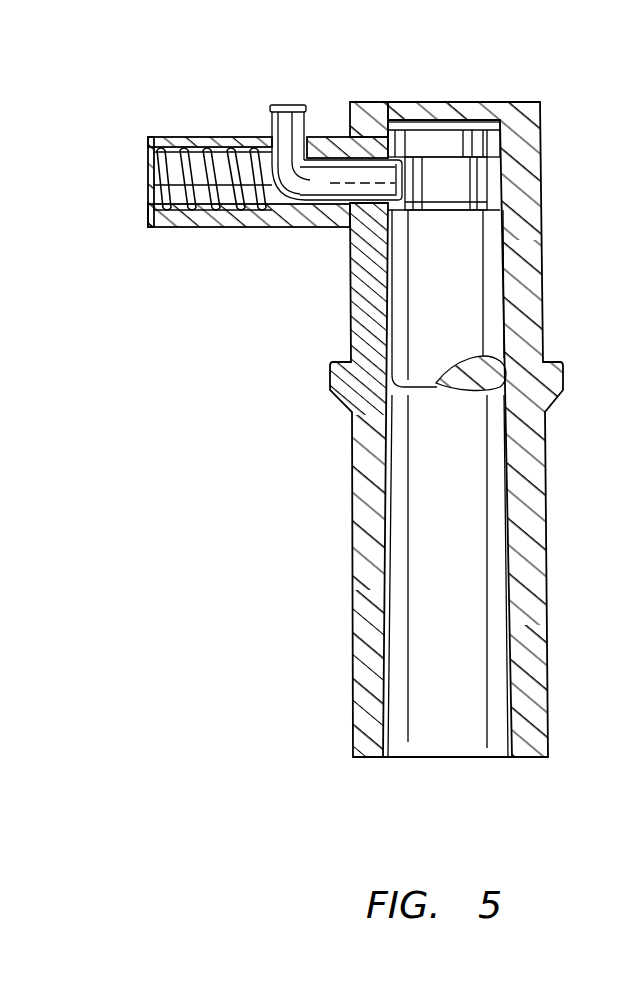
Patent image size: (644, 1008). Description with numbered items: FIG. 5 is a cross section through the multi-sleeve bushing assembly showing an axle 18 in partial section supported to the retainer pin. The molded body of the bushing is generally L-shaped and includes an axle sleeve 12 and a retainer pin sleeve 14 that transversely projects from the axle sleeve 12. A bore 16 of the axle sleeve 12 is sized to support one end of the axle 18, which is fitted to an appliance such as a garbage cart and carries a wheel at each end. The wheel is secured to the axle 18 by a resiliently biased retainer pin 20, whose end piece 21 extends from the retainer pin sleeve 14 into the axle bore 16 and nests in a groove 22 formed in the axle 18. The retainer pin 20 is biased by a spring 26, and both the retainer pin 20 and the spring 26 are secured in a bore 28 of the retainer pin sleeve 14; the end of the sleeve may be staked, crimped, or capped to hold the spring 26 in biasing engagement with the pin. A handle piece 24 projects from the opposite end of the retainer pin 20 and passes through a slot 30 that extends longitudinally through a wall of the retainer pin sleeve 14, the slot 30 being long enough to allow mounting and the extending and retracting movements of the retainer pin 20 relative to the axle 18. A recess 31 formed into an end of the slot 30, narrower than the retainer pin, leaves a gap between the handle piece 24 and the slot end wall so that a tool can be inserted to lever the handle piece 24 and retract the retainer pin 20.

The axle sleeve 12 is at (547, 503).
The retainer pin sleeve 14 is at (186, 218).
The bore 16 is at (447, 752).
The axle 18 is at (468, 268).
The retainer pin 20 is at (267, 137).
The end piece 21 is at (403, 177).
The groove 22 is at (490, 177).
The handle piece 24 is at (288, 103).
The spring 26 is at (154, 185).
The bore 28 is at (278, 199).
The slot 30 is at (192, 147).
The recess 31 is at (318, 137).